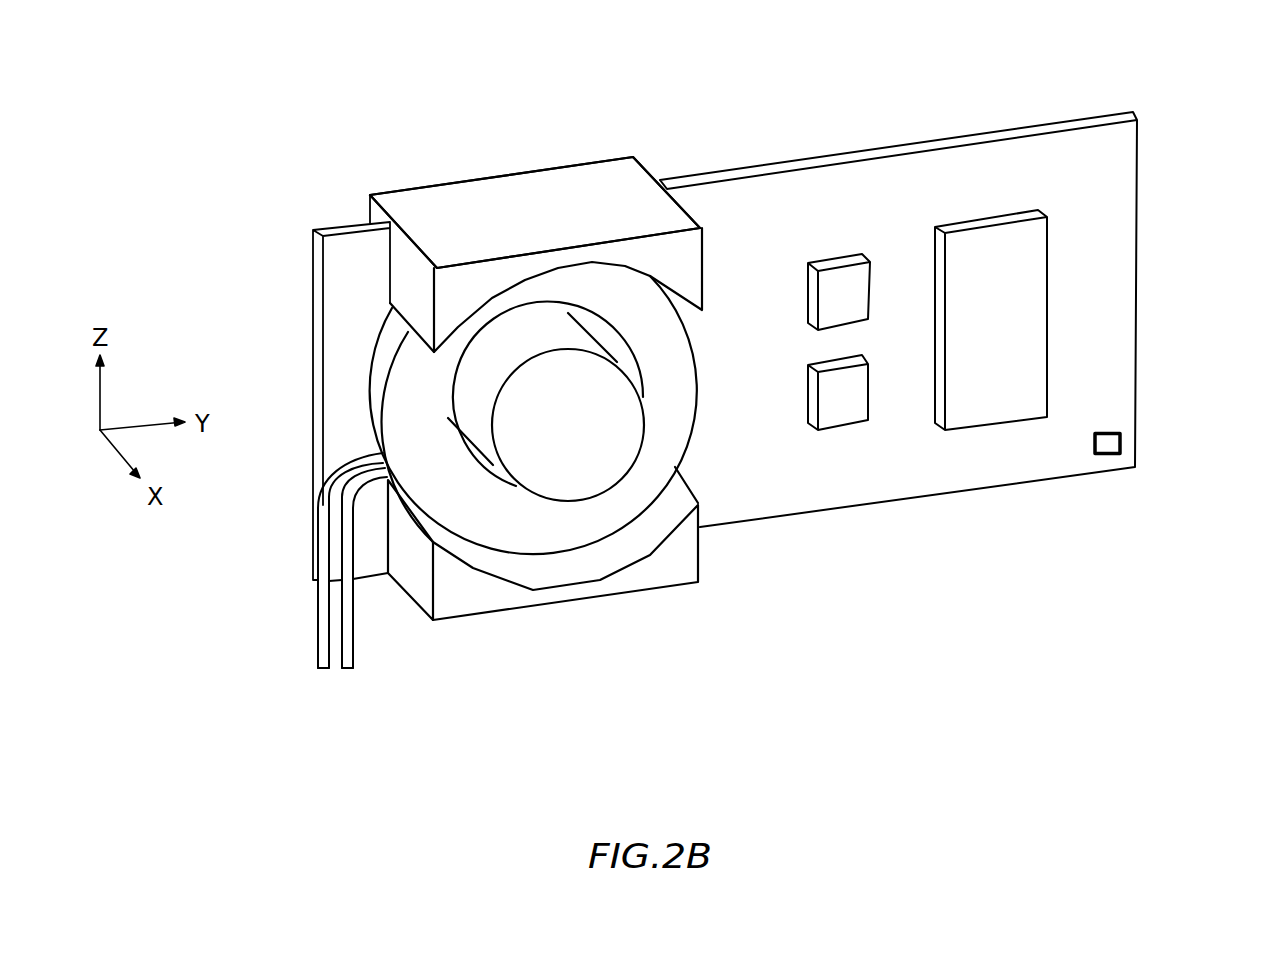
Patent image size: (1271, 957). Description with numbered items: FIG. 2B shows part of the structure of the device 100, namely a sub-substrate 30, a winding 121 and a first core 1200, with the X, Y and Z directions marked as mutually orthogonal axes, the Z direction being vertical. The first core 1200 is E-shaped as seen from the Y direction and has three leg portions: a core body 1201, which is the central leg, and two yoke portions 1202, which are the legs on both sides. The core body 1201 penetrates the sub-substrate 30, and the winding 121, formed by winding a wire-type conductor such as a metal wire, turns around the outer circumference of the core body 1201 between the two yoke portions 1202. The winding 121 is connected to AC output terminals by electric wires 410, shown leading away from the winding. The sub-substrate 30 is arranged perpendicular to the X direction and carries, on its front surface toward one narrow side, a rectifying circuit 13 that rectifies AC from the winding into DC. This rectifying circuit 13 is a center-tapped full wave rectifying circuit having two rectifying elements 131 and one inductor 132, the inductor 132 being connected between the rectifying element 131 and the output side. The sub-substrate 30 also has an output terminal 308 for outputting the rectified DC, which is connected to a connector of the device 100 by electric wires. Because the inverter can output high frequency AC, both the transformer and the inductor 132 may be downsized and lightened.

The device 100 is at (880, 96).
The sub-substrate 30 is at (1042, 113).
The rectifying circuit 13 is at (1043, 194).
The rectifying element 131 is at (808, 370).
The inductor 132 is at (933, 308).
The output terminal 308 is at (1122, 432).
The first core 1200 is at (570, 197).
The yoke portion 1202 is at (702, 265).
The core body 1201 is at (643, 398).
The winding 121 is at (695, 426).
The electric wire 410 is at (323, 669).